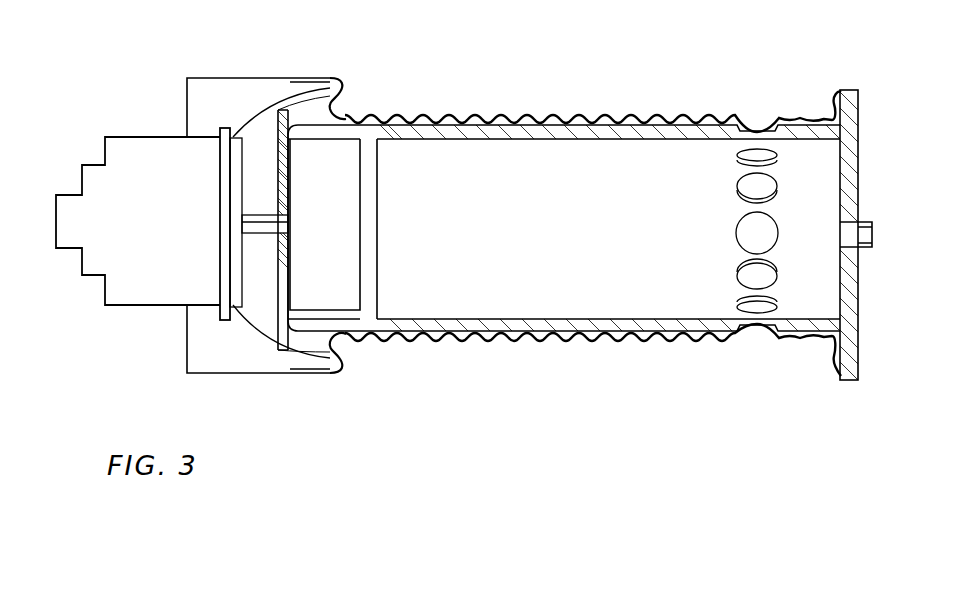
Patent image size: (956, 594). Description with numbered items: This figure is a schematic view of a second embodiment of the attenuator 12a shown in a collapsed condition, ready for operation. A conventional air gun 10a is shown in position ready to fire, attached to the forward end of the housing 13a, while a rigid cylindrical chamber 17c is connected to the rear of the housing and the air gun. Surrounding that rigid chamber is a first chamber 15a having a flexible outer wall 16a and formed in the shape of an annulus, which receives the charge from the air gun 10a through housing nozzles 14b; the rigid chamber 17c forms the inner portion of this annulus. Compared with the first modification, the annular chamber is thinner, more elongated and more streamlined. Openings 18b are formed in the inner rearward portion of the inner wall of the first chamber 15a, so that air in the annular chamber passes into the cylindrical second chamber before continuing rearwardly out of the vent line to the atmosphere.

The air gun 10a is at (192, 226).
The attenuator 12a is at (620, 49).
The housing 13a is at (236, 83).
The housing nozzles 14b is at (316, 103).
The first chamber 15a is at (484, 121).
The flexible outer wall 16a is at (550, 122).
The rigid cylindrical chamber 17c is at (627, 162).
The openings 18b is at (777, 143).